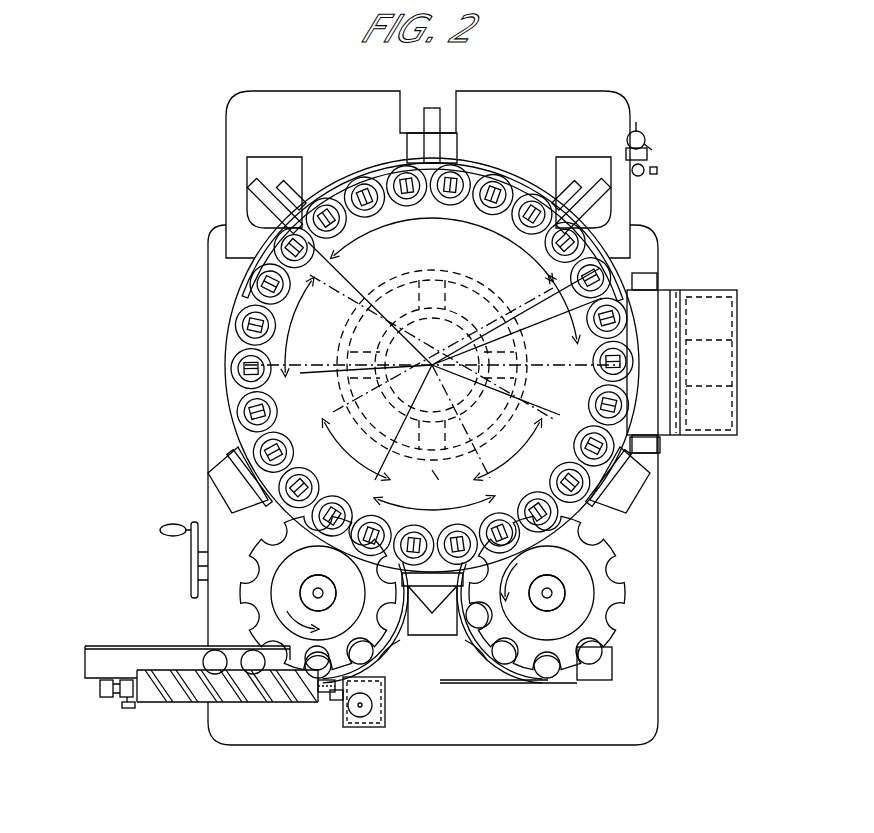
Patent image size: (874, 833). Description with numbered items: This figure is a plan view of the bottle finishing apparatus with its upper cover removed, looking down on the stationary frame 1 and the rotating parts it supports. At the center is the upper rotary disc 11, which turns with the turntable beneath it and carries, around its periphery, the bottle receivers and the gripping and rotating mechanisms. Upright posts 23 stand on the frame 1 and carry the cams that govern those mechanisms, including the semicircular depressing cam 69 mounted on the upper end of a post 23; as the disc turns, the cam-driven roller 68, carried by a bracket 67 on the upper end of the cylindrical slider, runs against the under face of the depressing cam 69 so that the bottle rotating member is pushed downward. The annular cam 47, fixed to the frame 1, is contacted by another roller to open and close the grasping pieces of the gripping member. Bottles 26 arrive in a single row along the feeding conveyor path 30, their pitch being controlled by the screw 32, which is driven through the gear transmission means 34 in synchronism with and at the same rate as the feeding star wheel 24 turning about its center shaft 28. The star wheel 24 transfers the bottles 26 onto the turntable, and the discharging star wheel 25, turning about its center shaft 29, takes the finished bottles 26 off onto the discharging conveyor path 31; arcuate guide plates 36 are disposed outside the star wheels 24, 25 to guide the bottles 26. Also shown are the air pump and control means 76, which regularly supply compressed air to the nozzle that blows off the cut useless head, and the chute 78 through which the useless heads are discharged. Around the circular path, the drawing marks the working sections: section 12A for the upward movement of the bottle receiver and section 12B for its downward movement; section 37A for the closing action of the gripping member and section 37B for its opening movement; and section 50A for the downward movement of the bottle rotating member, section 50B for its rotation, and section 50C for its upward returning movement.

The stationary frame 1 is at (215, 339).
The upper rotary disc 11 is at (352, 212).
The section for upward movement of the bottle receiver 12A is at (348, 450).
The section for downward movement of the bottle receiver 12B is at (513, 450).
The upright posts 23 is at (443, 143).
The star wheel 24 is at (260, 597).
The star wheel 25 is at (590, 557).
The bottles 26 is at (233, 655).
The center shaft of the feeding star wheel 28 is at (315, 592).
The center shaft of the discharging star wheel 29 is at (550, 594).
The conveyor path for feeding 30 is at (120, 657).
The conveyor path for discharging 31 is at (600, 650).
The screw 32 is at (232, 697).
The gear transmission means 34 is at (385, 703).
The arcuate guide plates 36 is at (432, 623).
The section for closing action of the gripping member 37A is at (300, 373).
The section for opening movement of the gripping member 37B is at (500, 382).
The annular cam 47 is at (434, 496).
The section for downward movement of the bottle rotating member 50A is at (305, 327).
The section for rotation of the bottle rotating member 50B is at (442, 243).
The section for upward returning movement of the bottle rotating member 50C is at (559, 309).
The bracket 67 is at (603, 515).
The cam-driven roller 68 is at (600, 465).
The semicircular depressing cam 69 is at (505, 195).
The air pump and control means 76 is at (648, 165).
The chute 78 is at (706, 302).